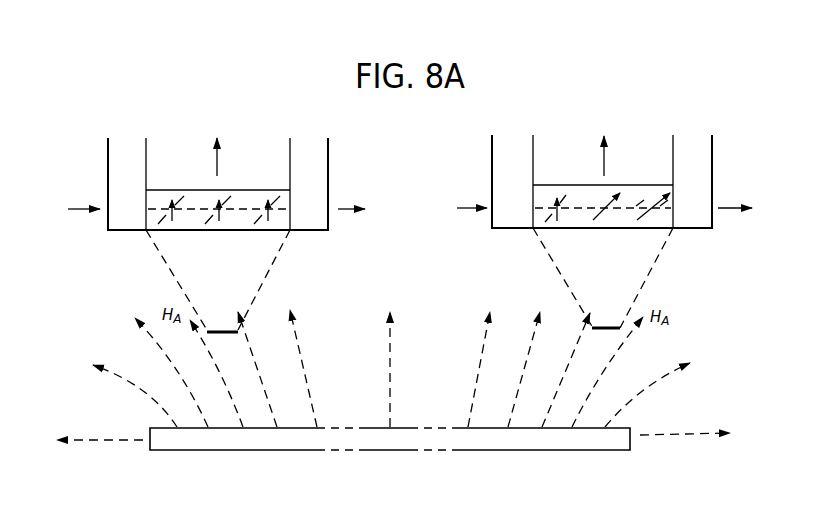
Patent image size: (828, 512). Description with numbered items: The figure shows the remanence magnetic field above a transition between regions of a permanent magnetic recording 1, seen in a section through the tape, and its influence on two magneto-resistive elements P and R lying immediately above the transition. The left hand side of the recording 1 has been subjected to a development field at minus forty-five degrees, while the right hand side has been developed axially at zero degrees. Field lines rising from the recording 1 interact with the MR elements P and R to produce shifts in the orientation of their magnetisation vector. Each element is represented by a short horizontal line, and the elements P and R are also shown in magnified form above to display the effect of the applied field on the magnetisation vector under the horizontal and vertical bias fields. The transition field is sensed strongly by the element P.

The permanent magnetic recording 1 is at (380, 450).
The MR element P is at (146, 231).
The MR element R is at (700, 229).